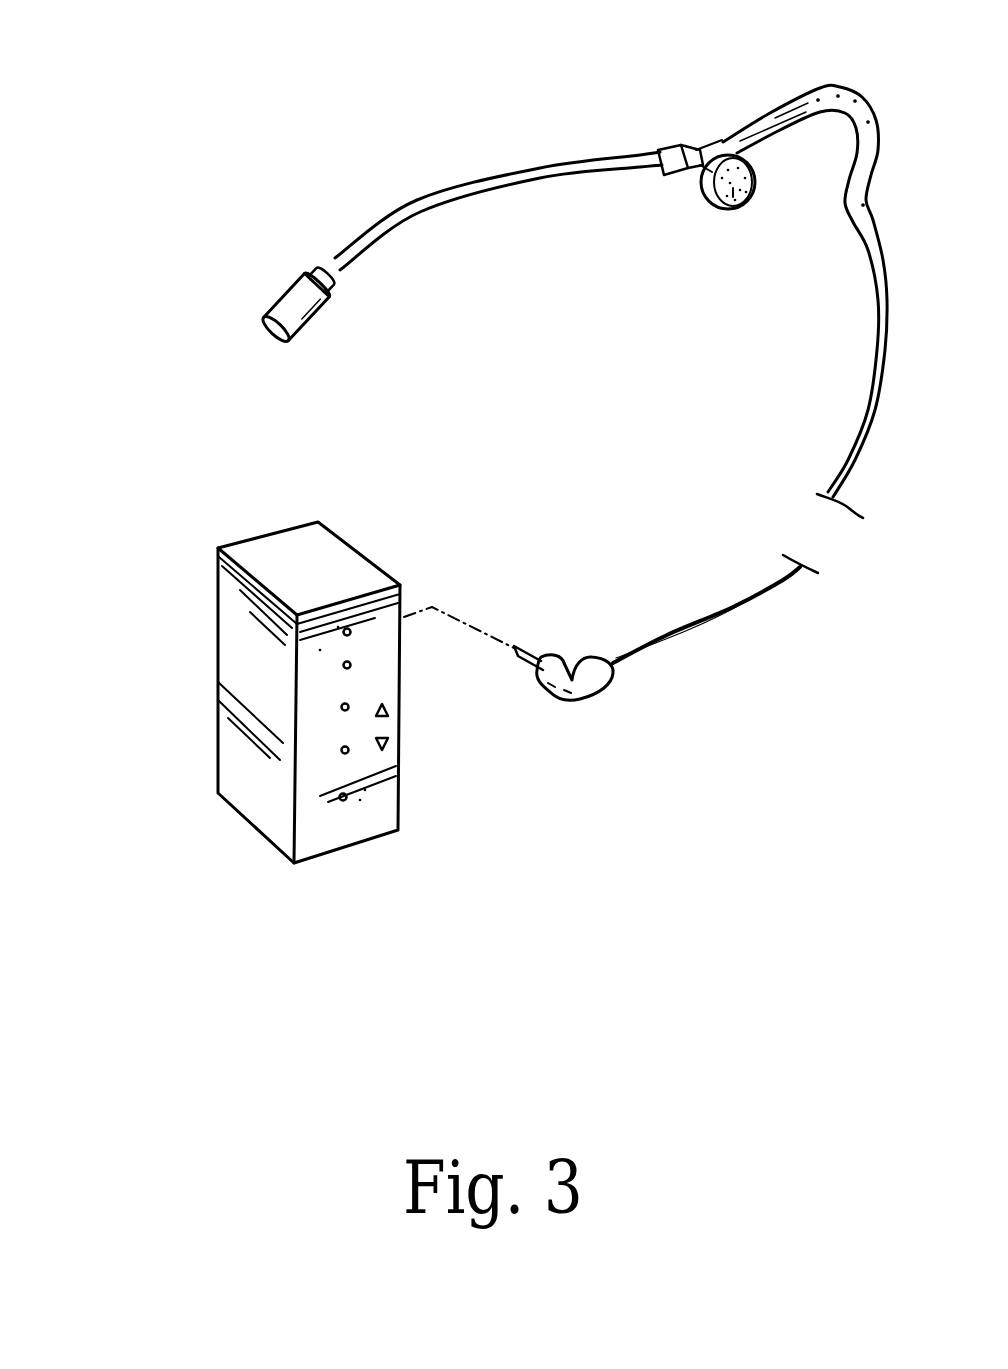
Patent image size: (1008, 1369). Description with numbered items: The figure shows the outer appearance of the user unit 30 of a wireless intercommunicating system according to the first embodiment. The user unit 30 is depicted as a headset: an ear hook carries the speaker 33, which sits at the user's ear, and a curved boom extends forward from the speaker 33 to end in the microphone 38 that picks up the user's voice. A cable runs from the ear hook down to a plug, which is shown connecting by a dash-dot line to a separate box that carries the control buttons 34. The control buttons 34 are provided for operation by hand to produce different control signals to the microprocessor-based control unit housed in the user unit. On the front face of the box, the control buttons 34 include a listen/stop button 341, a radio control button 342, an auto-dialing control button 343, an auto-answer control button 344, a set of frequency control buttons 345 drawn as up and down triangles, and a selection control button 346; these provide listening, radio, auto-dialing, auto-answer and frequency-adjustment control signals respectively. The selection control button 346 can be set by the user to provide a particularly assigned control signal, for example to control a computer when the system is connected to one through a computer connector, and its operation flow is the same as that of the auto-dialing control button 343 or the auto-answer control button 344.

The user unit 30 is at (438, 122).
The speaker 33 is at (733, 190).
The microphone 38 is at (297, 297).
The control buttons 34 is at (160, 615).
The listen/stop button 341 is at (350, 630).
The radio control button 342 is at (344, 666).
The auto-dialing control button 343 is at (342, 708).
The auto-answer control button 344 is at (343, 751).
The frequency control buttons 345 is at (390, 722).
The selection control button 346 is at (343, 800).